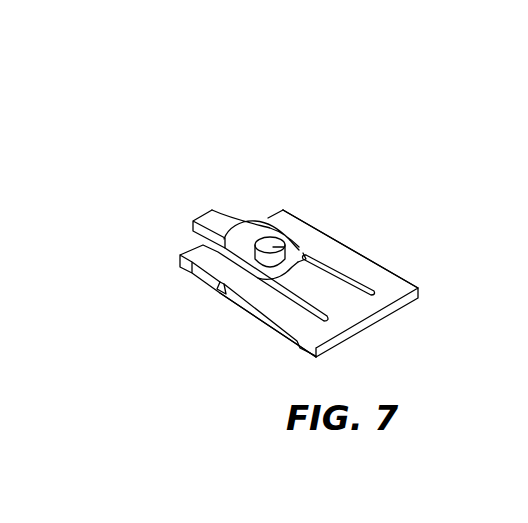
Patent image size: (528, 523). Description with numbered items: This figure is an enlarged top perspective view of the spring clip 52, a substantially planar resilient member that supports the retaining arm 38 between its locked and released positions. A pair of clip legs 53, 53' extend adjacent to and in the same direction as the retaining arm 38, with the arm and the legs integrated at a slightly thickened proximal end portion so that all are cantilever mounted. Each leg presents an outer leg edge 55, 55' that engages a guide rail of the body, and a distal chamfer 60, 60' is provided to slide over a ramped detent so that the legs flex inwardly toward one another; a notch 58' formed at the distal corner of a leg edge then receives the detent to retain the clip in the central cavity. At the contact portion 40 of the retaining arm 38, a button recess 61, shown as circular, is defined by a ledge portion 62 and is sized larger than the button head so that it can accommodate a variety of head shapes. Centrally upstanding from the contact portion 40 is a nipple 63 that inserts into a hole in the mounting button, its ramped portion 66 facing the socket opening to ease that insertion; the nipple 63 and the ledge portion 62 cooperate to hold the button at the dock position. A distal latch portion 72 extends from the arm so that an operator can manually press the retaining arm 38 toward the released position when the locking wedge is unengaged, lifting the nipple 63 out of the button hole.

The spring clip 52 is at (414, 171).
The contact portion 40 is at (322, 234).
The retaining arm 38 is at (225, 213).
The distal chamfer 60 is at (217, 301).
The distal chamfer 60' is at (313, 177).
The button recess 61 is at (224, 204).
The ledge portion 62 is at (318, 272).
The nipple 63 is at (272, 222).
The ramped portion 66 is at (297, 226).
The distal latch portion 72 is at (212, 210).
The leg edge 55 is at (247, 331).
The leg edge 55' is at (331, 199).
The clip leg 53 is at (268, 339).
The clip leg 53' is at (367, 249).
The notch 58' is at (270, 240).